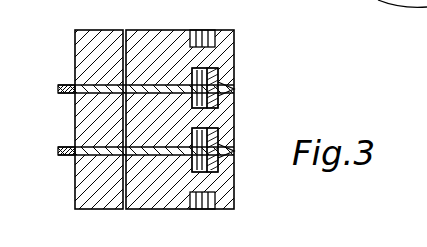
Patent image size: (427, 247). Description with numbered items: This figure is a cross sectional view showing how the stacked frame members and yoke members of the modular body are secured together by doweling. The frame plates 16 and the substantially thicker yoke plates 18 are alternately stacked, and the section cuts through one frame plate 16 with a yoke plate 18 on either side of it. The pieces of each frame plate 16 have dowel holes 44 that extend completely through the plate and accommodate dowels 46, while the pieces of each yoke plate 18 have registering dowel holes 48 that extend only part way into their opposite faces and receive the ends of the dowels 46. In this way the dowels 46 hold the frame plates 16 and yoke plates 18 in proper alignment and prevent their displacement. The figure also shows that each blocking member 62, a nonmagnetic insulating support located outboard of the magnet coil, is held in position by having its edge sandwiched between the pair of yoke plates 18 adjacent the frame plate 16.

The frame plate 16 is at (234, 89).
The yoke plate 18 is at (236, 37).
The dowel hole 44 is at (219, 99).
The dowel 46 is at (219, 78).
The dowel hole 48 is at (212, 38).
The blocking member 62 is at (62, 85).